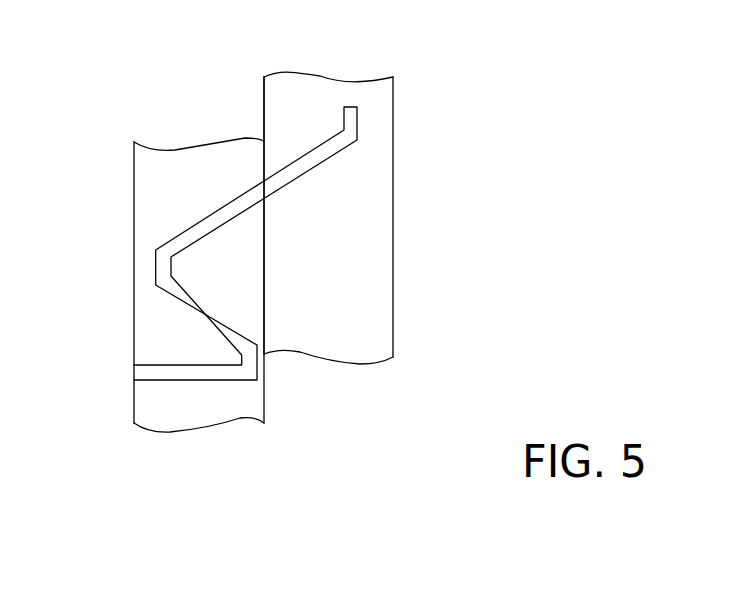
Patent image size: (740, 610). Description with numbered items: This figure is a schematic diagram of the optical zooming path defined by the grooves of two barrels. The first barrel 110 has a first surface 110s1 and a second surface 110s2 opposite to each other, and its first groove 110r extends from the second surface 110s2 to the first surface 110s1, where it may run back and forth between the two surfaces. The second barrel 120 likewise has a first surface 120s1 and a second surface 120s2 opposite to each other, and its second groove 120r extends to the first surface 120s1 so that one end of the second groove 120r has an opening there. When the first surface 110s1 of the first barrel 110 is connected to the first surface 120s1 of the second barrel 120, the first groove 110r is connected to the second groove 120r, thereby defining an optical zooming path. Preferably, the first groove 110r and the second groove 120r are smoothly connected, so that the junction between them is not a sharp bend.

The first barrel 110 is at (190, 165).
The first groove 110r is at (210, 222).
The first surface of the first barrel 110s1 is at (264, 282).
The second surface of the first barrel 110s2 is at (134, 307).
The second barrel 120 is at (288, 88).
The second groove 120r is at (295, 170).
The first surface of the second barrel 120s1 is at (264, 110).
The second surface of the second barrel 120s2 is at (393, 103).